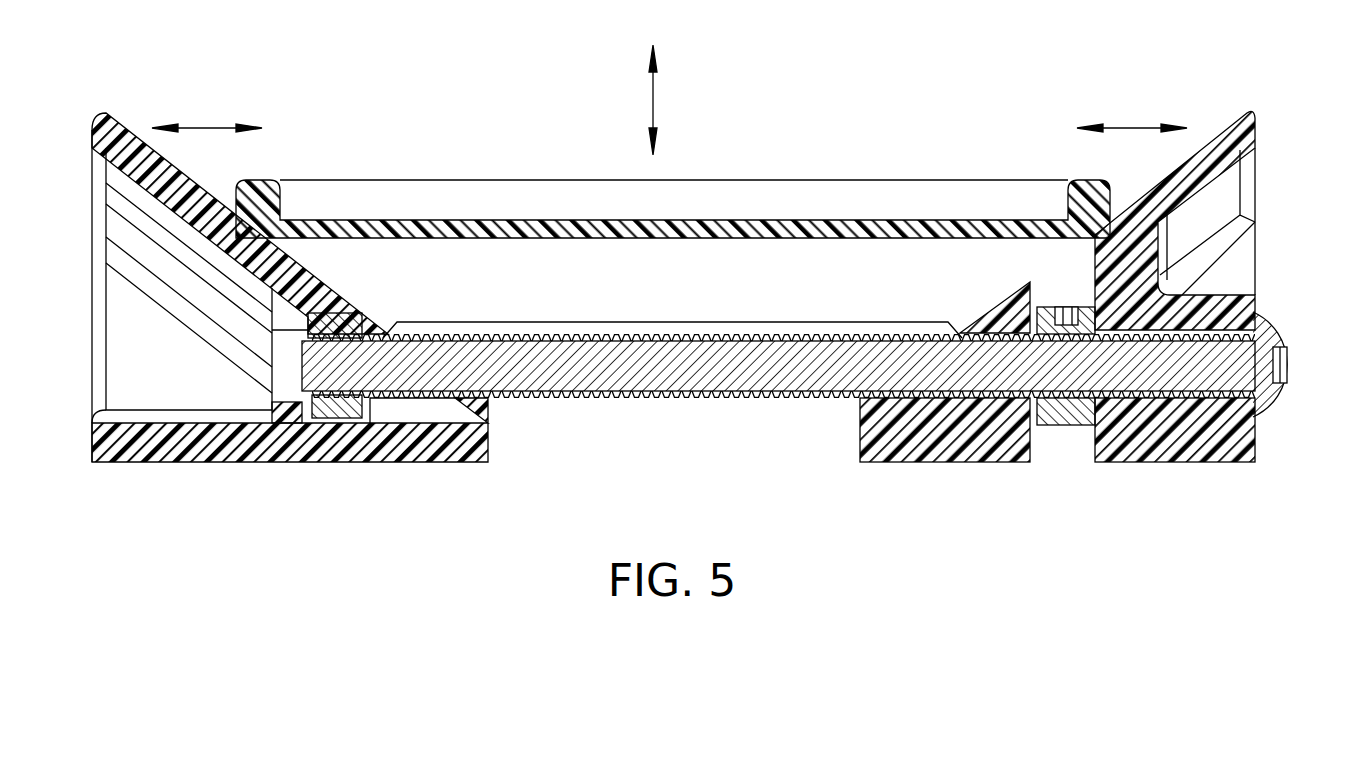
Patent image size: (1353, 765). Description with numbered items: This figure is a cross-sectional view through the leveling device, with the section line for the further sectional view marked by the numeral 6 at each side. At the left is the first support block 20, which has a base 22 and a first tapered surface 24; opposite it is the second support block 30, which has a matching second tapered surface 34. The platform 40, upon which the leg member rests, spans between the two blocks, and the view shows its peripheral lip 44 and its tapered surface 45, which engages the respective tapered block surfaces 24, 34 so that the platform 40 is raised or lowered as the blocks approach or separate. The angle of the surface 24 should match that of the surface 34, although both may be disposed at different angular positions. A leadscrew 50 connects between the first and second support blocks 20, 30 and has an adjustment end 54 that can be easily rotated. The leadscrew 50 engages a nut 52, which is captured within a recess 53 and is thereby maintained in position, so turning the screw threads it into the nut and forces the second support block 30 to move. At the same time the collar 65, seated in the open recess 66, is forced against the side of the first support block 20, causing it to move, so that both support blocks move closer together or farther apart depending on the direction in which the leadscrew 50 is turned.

The first support block 20 is at (671, 296).
The base of first support block 22 is at (293, 462).
The tapered surface of first support block 24 is at (170, 190).
The second support block 30 is at (1041, 325).
The tapered surface of the second support block 34 is at (1150, 188).
The platform 40 is at (673, 158).
The peripheral lip of the platform 44 is at (268, 197).
The tapered surface of the platform 45 is at (270, 202).
The leadscrew 50 is at (821, 358).
The nut 52 is at (350, 420).
The capture recess fitted to nut 53 is at (308, 308).
The leadscrew adjustment end 54 is at (1290, 312).
The collar shaft lock 65 is at (1068, 428).
The open recess 66 is at (1082, 447).
The section line 6- 6 is at (135, 365).